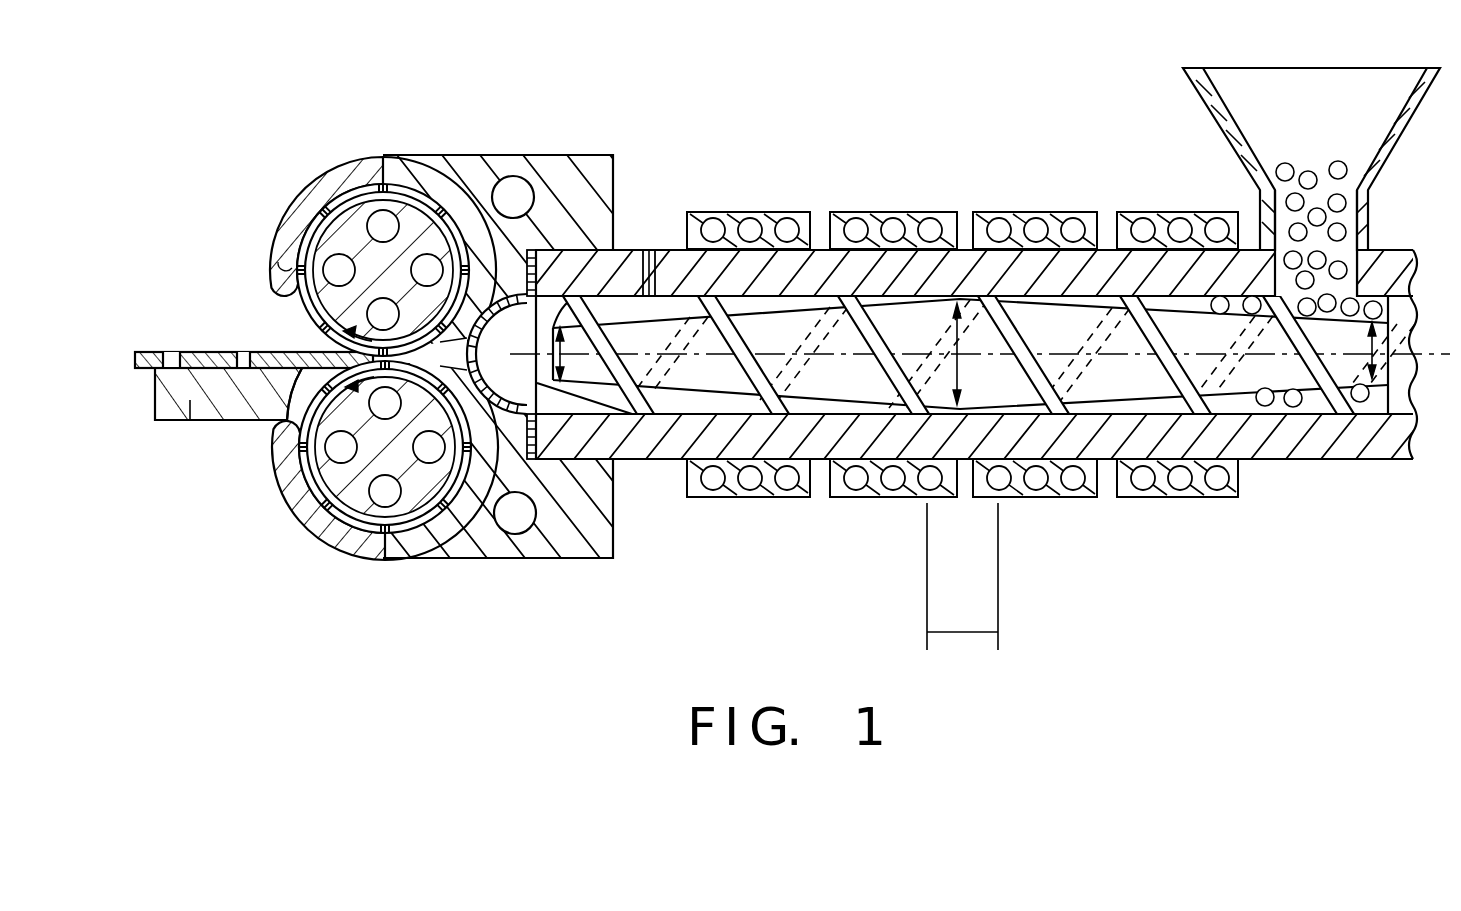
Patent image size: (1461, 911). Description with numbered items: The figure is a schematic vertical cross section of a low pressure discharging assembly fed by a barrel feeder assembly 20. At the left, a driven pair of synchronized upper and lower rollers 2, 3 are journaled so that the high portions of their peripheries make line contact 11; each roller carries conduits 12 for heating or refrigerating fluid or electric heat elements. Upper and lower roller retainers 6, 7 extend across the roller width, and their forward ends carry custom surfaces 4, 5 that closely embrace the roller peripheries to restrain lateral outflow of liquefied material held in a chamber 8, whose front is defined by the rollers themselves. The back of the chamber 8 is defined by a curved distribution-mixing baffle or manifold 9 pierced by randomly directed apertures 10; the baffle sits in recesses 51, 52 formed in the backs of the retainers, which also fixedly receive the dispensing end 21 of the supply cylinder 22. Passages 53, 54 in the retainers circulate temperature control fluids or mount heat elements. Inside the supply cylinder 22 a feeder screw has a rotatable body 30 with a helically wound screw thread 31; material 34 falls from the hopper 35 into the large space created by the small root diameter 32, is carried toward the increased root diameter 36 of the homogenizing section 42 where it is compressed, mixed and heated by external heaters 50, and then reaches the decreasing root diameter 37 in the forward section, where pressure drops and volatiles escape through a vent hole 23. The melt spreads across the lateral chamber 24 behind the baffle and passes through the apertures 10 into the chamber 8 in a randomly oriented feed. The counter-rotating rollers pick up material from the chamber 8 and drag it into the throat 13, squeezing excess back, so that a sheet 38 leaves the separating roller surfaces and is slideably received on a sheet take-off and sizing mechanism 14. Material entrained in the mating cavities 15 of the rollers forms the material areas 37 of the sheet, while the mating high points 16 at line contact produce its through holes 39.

The upper roller 2 is at (305, 225).
The lower roller 3 is at (343, 513).
The custom surface of upper retainer 4 is at (340, 205).
The custom surface of lower retainer 5 is at (368, 527).
The upper roller retainer 6 is at (590, 154).
The lower roller retainer 7 is at (545, 455).
The chamber 8 is at (470, 470).
The distribution-mixing baffle or manifold 9 is at (620, 462).
The apertures 10 is at (478, 485).
The line contact 11 is at (353, 493).
The conduits 12 is at (297, 223).
The throat 13 is at (330, 350).
The sheet take-off and sizing mechanism 14 is at (156, 420).
The mating cavities 15 is at (282, 258).
The mating high points 16 is at (296, 285).
The barrel feeder assembly 20 is at (873, 527).
The dispensing end 21 is at (643, 462).
The supply cylinder 22 is at (818, 498).
The vent hole 23 is at (650, 248).
The lateral chamber 24 is at (478, 246).
The rotatable body of feeder screw 30 is at (1300, 462).
The screw thread 31 is at (1333, 412).
The small root diameter 32 is at (1372, 400).
The materials 34 is at (1300, 160).
The hopper 35 is at (1195, 85).
The increased root diameter 36 is at (953, 340).
The decreasing root diameter / material areas 37 is at (617, 247).
The sheet 38 is at (137, 352).
The through holes 39 is at (235, 368).
The homogenizing section 42 is at (990, 578).
The external heaters 50 is at (1085, 500).
The recess in upper retainer 51 is at (518, 296).
The recess in lower retainer 52 is at (548, 527).
The passage in upper retainer 53 is at (520, 290).
The passage in lower retainer 54 is at (517, 537).